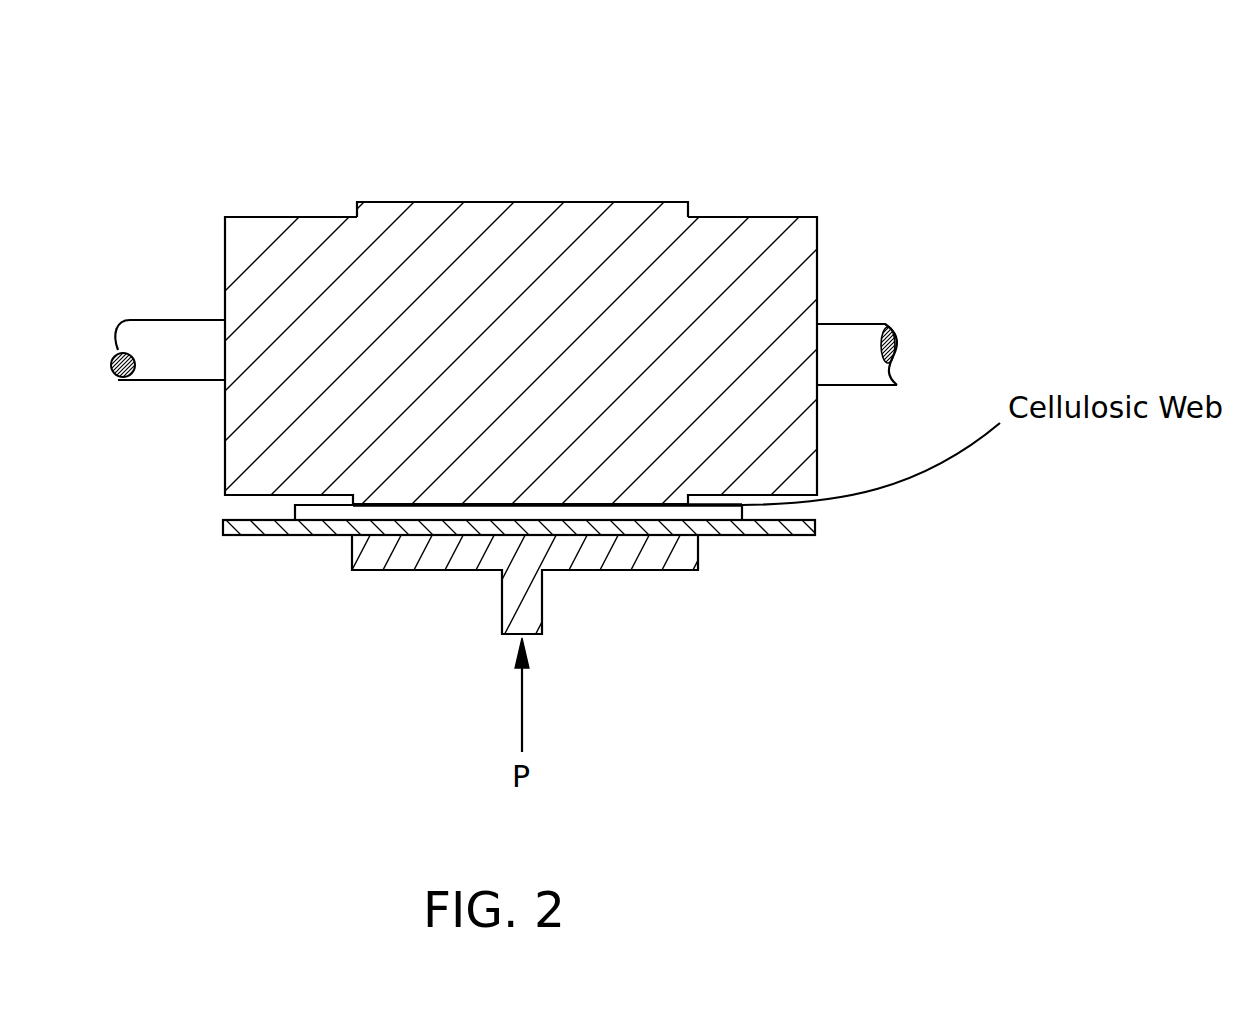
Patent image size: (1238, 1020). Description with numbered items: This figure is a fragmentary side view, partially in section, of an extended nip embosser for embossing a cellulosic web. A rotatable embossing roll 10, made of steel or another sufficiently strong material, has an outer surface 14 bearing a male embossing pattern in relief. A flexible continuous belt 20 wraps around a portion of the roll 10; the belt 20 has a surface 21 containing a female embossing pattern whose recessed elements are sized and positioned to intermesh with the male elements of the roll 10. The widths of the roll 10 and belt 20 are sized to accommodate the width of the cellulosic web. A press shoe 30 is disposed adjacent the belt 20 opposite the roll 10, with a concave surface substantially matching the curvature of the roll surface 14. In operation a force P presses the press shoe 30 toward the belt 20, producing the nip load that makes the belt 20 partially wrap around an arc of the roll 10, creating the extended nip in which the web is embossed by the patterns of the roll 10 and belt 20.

The embossing roll 10 is at (816, 250).
The roll outer surface 14 is at (507, 203).
The flexible continuous belt 20 is at (812, 522).
The belt surface 21 is at (240, 519).
The press shoe 30 is at (658, 571).